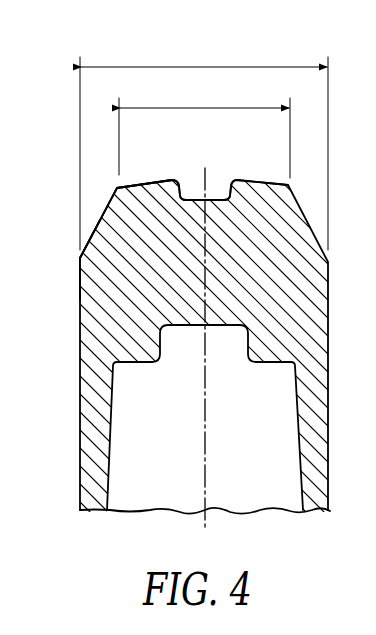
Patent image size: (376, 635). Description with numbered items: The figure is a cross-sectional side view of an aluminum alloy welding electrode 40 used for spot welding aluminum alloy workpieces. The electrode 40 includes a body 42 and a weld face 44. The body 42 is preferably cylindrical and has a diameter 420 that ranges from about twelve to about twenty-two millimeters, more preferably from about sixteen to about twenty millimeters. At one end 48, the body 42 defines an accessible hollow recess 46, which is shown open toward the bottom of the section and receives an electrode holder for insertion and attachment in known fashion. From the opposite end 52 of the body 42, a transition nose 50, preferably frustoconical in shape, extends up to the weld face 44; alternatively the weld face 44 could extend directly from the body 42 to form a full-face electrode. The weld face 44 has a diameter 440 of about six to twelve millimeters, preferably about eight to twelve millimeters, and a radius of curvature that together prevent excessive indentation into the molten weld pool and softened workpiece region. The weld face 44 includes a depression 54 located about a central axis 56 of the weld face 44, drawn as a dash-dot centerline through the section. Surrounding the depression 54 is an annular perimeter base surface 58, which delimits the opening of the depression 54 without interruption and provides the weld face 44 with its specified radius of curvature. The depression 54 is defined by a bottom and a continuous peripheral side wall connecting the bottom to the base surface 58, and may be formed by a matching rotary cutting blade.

The aluminum alloy welding electrode 40 is at (75, 311).
The body 42 is at (113, 325).
The weld face 44 is at (133, 181).
The hollow recess 46 is at (108, 477).
The end 48 is at (77, 513).
The transition nose 50 is at (107, 212).
The opposite end 52 is at (77, 256).
The depression 54 is at (180, 196).
The central axis 56 is at (202, 413).
The annular perimeter base surface 58 is at (147, 181).
The diameter 420 is at (208, 66).
The diameter 440 is at (217, 108).